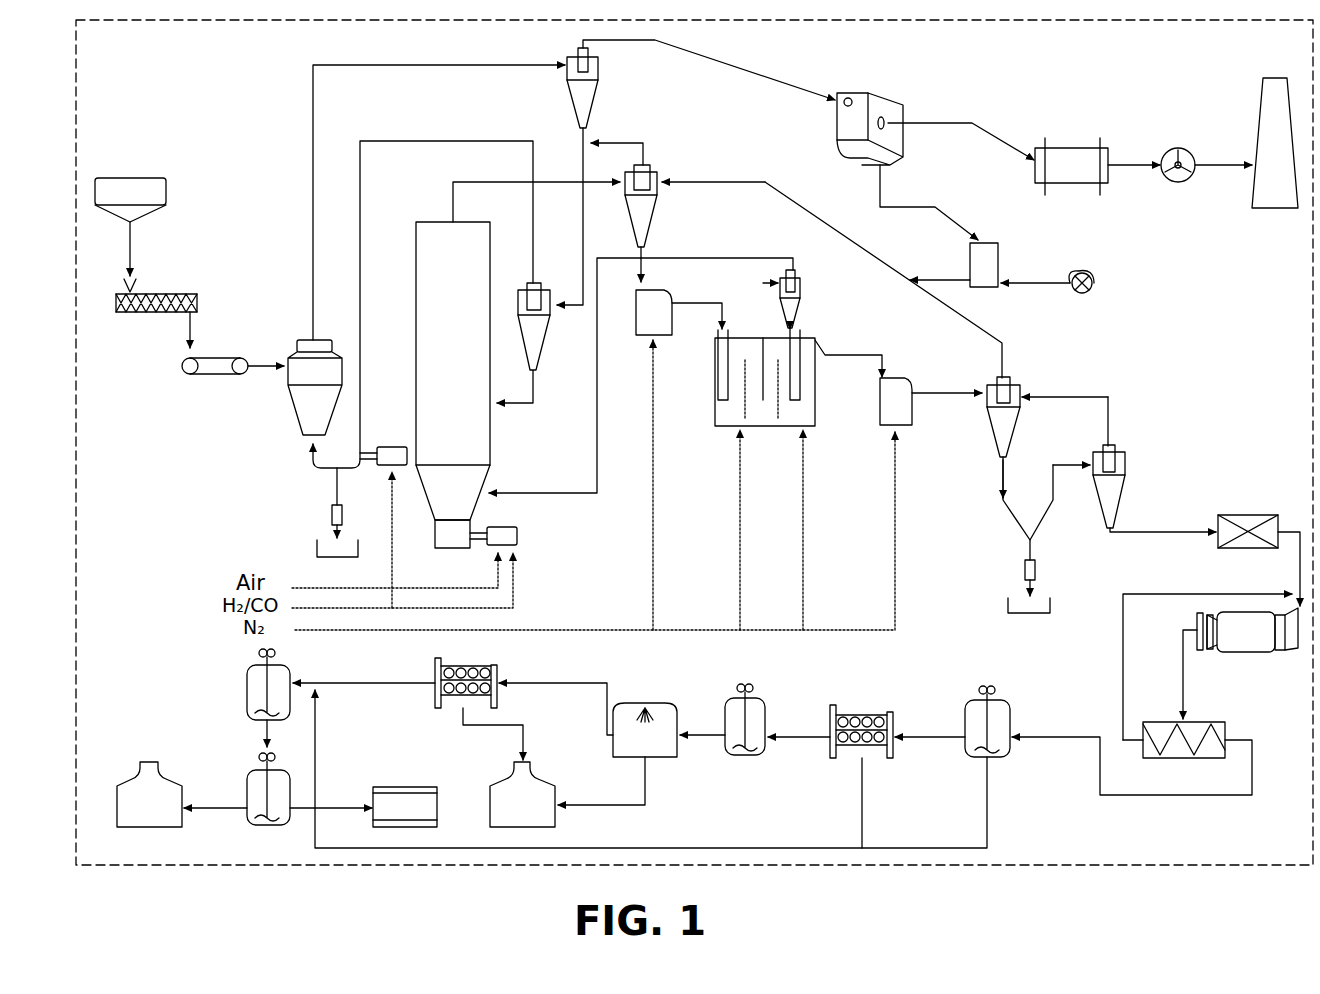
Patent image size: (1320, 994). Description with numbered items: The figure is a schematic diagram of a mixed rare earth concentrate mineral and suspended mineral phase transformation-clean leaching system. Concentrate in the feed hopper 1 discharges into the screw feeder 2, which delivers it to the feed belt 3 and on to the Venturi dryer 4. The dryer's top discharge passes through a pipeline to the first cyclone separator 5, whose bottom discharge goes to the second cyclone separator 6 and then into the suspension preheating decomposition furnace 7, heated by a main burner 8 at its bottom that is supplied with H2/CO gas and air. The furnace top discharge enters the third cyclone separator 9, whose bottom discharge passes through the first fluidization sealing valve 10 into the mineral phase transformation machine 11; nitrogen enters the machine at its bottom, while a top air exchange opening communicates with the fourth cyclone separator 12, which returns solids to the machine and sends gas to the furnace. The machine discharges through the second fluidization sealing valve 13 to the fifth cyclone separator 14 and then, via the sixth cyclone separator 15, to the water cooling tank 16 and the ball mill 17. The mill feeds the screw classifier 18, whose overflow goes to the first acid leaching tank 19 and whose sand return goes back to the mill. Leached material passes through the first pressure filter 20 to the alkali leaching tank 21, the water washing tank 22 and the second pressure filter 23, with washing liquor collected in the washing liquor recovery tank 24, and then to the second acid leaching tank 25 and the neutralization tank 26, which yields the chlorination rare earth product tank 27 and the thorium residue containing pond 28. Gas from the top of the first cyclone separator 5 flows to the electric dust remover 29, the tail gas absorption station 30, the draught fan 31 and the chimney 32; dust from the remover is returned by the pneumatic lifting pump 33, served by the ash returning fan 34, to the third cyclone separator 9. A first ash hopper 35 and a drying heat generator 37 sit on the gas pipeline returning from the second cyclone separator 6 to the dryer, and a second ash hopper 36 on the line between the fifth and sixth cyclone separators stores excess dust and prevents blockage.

The feed hopper 1 is at (175, 186).
The screw feeder 2 is at (178, 290).
The feed belt 3 is at (228, 352).
The Venturi dryer 4 is at (283, 410).
The first cyclone separator 5 is at (570, 107).
The second cyclone separator 6 is at (550, 345).
The suspension preheating decomposition furnace 7 is at (500, 458).
The main burner 8 is at (525, 527).
The third cyclone separator 9 is at (666, 167).
The first fluidization sealing valve 10 is at (680, 293).
The mineral phase transformation machine 11 is at (711, 400).
The fourth cyclone separator 12 is at (808, 292).
The second fluidization sealing valve 13 is at (900, 380).
The fifth cyclone separator 14 is at (1025, 380).
The sixth cyclone separator 15 is at (1132, 460).
The water cooling tank 16 is at (1225, 513).
The ball mill 17 is at (1248, 657).
The screw classifier 18 is at (1195, 765).
The first acid leaching tank 19 is at (1012, 755).
The first pressure filter 20 is at (880, 700).
The alkali leaching tank 21 is at (770, 708).
The water washing tank 22 is at (688, 700).
The second pressure filter 23 is at (435, 672).
The washing liquor recovery tank 24 is at (490, 782).
The second acid leaching tank 25 is at (245, 683).
The neutralization tank 26 is at (245, 776).
The chlorination rare earth product tank 27 is at (148, 760).
The thorium residue containing pond 28 is at (400, 780).
The electric dust remover 29 is at (905, 92).
The tail gas absorption station 30 is at (1090, 200).
The draught fan 31 is at (1175, 143).
The chimney 32 is at (1262, 218).
The pneumatic lifting pump 33 is at (1012, 252).
The ash returning fan 34 is at (1105, 298).
The first ash hopper 35 is at (322, 526).
The second ash hopper 36 is at (1048, 573).
The drying heat generator 37 is at (397, 441).